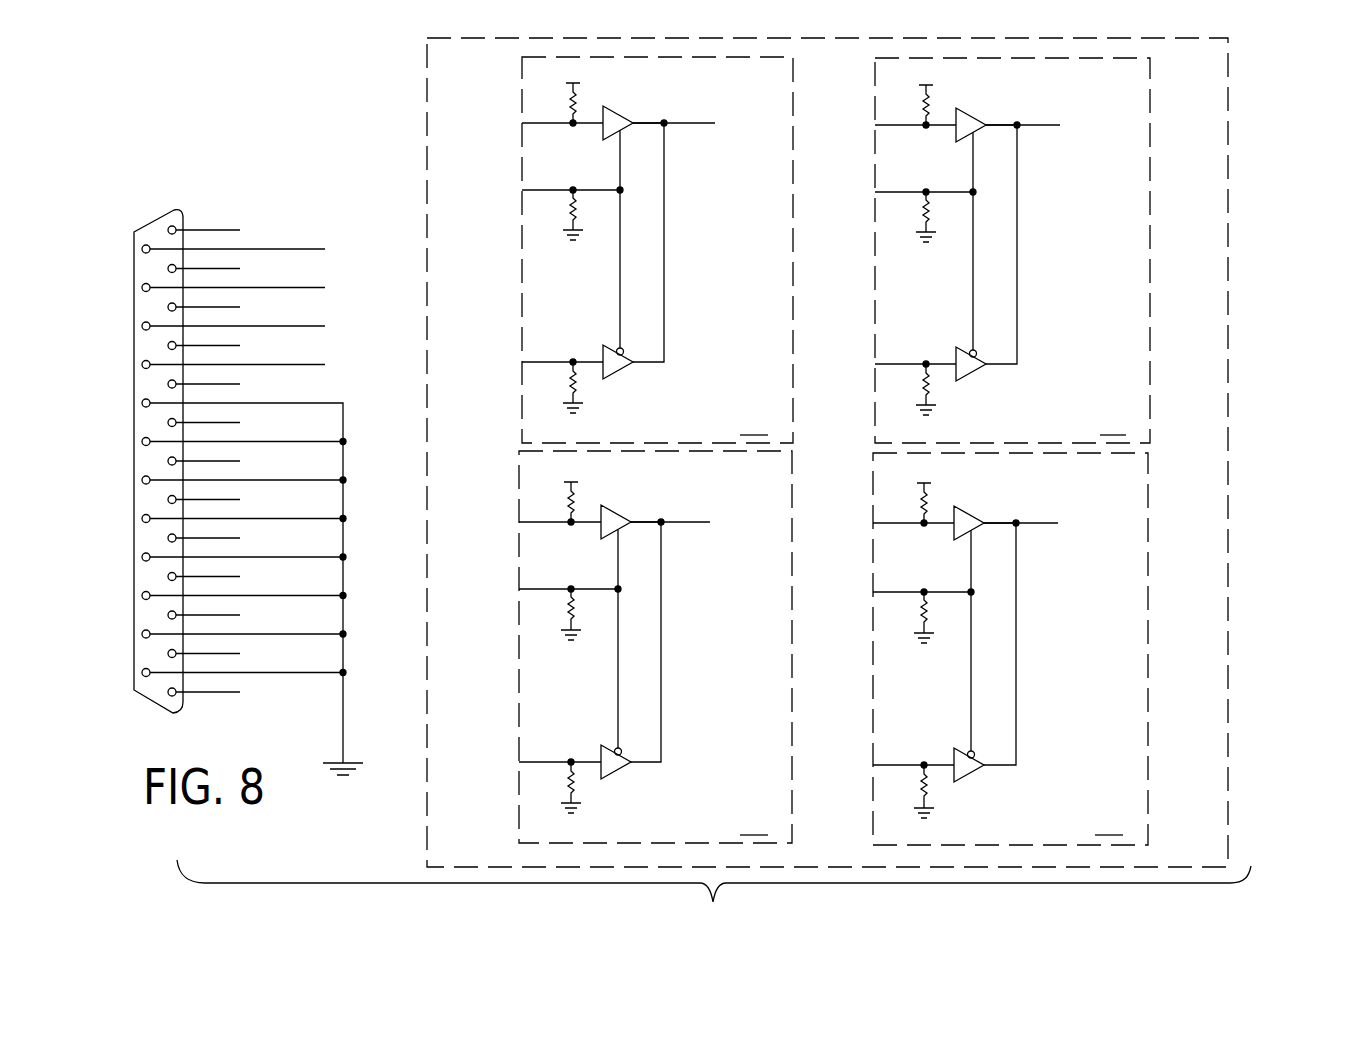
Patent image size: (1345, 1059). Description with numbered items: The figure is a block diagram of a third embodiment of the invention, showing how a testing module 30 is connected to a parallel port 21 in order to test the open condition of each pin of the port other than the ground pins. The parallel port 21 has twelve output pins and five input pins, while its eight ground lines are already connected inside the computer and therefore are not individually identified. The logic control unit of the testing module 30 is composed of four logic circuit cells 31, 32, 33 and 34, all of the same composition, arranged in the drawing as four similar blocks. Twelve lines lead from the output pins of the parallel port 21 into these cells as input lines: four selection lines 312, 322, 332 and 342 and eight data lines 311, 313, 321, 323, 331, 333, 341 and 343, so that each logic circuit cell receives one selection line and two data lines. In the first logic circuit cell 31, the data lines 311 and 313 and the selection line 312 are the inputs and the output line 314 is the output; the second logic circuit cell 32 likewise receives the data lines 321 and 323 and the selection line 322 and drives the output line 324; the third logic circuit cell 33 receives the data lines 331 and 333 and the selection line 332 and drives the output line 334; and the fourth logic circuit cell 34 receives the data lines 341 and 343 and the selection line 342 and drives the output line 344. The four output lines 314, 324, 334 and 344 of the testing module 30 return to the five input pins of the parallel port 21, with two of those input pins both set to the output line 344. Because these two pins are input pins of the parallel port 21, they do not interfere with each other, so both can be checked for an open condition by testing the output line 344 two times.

The parallel port 21 is at (241, 208).
The testing module 30 is at (1240, 452).
The logic circuit cell 31 is at (748, 342).
The logic circuit cell 32 is at (1108, 323).
The logic circuit cell 33 is at (748, 742).
The logic circuit cell 34 is at (1107, 722).
The data line 311 is at (545, 123).
The selection line 312 is at (548, 190).
The data line 313 is at (545, 362).
The output line 314 is at (705, 124).
The data line 321 is at (898, 125).
The selection line 322 is at (886, 192).
The data line 323 is at (888, 364).
The output line 324 is at (1060, 126).
The data line 331 is at (542, 522).
The selection line 332 is at (530, 589).
The data line 333 is at (533, 763).
The output line 334 is at (700, 522).
The data line 341 is at (882, 523).
The selection line 342 is at (882, 592).
The data line 343 is at (887, 765).
The output line 344 is at (1058, 525).